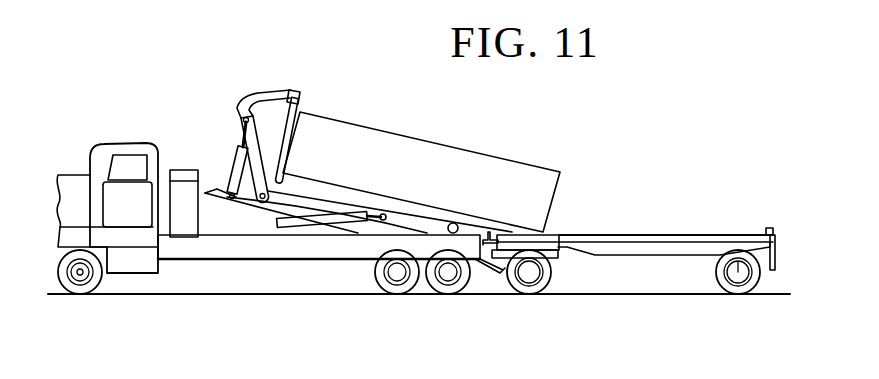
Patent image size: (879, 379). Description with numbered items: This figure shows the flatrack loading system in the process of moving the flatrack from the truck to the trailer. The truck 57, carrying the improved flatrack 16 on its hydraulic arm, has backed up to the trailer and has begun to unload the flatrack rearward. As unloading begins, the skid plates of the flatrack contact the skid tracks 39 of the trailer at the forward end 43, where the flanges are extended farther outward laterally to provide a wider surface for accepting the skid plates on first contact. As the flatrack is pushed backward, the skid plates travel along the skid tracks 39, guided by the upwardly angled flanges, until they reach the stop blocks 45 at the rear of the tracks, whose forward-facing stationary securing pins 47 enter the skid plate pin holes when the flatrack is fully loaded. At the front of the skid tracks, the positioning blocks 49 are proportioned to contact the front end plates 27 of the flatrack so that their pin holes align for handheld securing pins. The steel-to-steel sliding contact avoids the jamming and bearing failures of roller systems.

The flatrack 16 is at (419, 131).
The front end plate 27 is at (303, 158).
The skid track 39 is at (665, 235).
The forward end of the trailer 43 is at (558, 238).
The stop block 45 is at (773, 228).
The stationary securing pin 47 is at (764, 229).
The positioning block 49 is at (495, 233).
The truck 57 is at (75, 175).